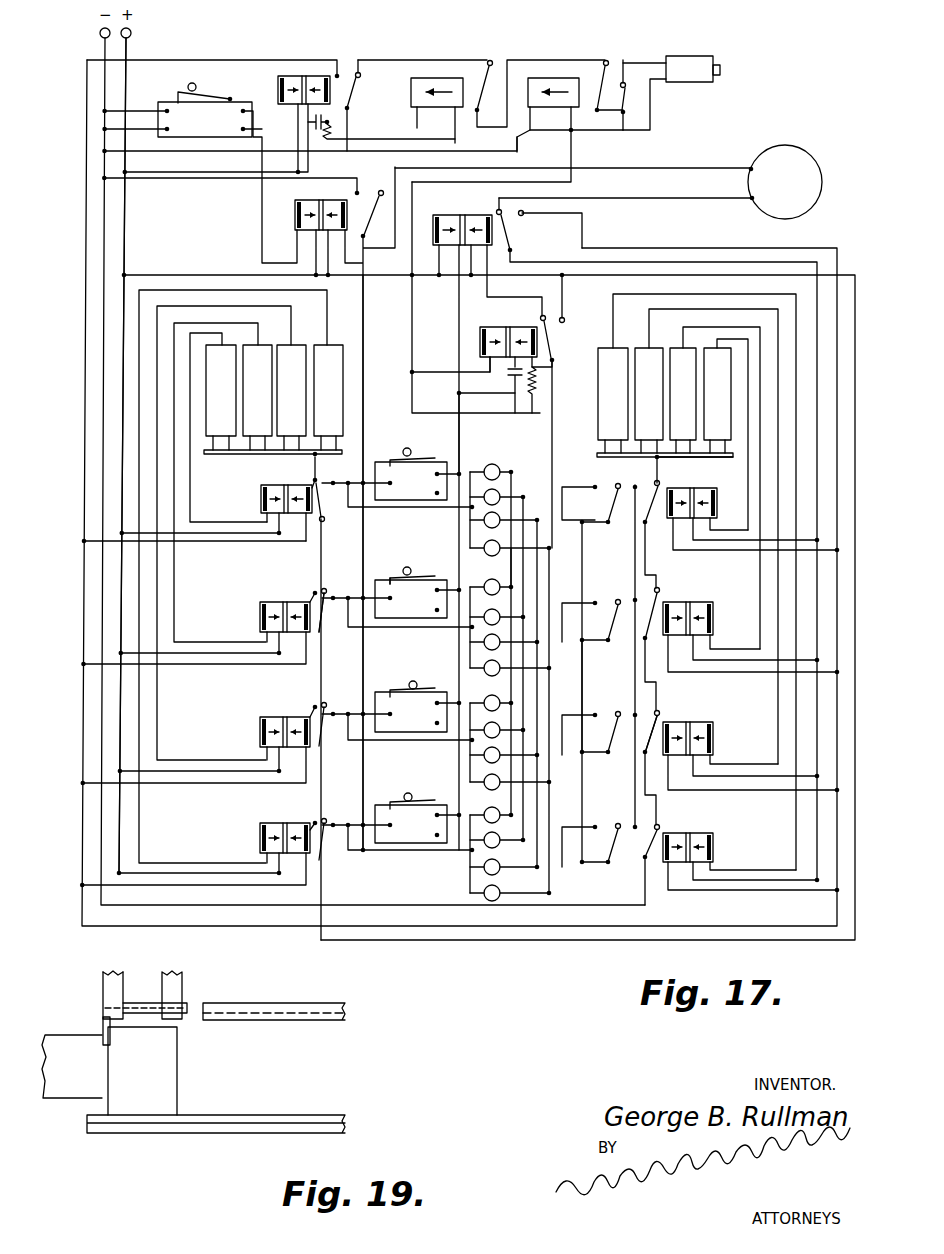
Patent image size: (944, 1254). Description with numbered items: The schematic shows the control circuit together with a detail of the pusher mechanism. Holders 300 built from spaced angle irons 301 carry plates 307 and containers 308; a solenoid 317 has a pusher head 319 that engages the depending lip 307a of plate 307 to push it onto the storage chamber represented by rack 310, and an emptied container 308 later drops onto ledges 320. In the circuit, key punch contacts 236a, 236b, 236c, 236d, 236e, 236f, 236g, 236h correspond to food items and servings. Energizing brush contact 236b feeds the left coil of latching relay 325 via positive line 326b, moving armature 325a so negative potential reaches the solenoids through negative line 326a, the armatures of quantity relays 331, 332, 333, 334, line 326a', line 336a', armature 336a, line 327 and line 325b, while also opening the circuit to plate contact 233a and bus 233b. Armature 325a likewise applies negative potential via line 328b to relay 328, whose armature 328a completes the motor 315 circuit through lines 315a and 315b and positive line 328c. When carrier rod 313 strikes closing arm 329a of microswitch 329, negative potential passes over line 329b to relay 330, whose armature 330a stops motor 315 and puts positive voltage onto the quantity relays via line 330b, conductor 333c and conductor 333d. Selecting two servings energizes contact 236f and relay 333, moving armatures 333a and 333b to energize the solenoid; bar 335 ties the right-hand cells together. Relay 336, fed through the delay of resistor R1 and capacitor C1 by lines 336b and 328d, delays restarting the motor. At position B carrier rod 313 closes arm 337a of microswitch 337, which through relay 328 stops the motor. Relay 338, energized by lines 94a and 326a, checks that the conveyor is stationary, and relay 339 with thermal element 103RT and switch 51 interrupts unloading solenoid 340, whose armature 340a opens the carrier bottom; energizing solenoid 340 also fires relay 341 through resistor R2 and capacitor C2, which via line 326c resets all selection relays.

In FIG. 17, the carrier rod 313 is at (196, 86).
In FIG. 17, the double pole double throw microswitch 337 is at (199, 182).
In FIG. 17, the closing arm 337a is at (178, 96).
In FIG. 17, the single pole double throw latching relay 341 is at (302, 75).
In FIG. 17, the capacitor C2 is at (312, 128).
In FIG. 17, the resistor R2 is at (334, 130).
In FIG. 17, the thermal relay 103RT is at (518, 142).
In FIG. 17, the single pole single throw normally closed relay 338 is at (440, 76).
In FIG. 17, the line 94a is at (417, 114).
In FIG. 17, the single pole single throw normally closed relay 339 is at (574, 52).
In FIG. 17, the switch 51 is at (624, 84).
In FIG. 17, the unloading solenoid 340 is at (702, 48).
In FIG. 17, the armature 340a is at (722, 70).
In FIG. 17, the motor 315 is at (800, 152).
In FIG. 17, the line 315a is at (668, 168).
In FIG. 17, the line 315b is at (662, 198).
In FIG. 17, the negative line 326a is at (429, 493).
In FIG. 17, the positive line 326b is at (126, 192).
In FIG. 17, the line 326c is at (84, 541).
In FIG. 17, the line 326a' is at (621, 680).
In FIG. 17, the latching relay 328 is at (300, 224).
In FIG. 17, the armature 328a is at (378, 190).
In FIG. 17, the line 328b is at (365, 318).
In FIG. 17, the positive line 328c is at (128, 274).
In FIG. 17, the line 328d is at (412, 350).
In FIG. 17, the single pole single throw latching relay 330 is at (474, 214).
In FIG. 17, the armature 330a is at (512, 228).
In FIG. 17, the line 330b is at (588, 232).
In FIG. 17, the line 327 is at (836, 272).
In FIG. 17, the key punch contact 236a is at (218, 432).
In FIG. 17, the brush contact 236b is at (262, 474).
In FIG. 17, the key punch contact 236c is at (288, 345).
In FIG. 17, the key punch contact 236d is at (384, 384).
In FIG. 17, the key punch contact 236e is at (602, 320).
In FIG. 17, the brush contact 236f is at (648, 350).
In FIG. 17, the key punch contact 236g is at (690, 350).
In FIG. 17, the key punch contact 236h is at (780, 308).
In FIG. 17, the plate contact 233a is at (252, 454).
In FIG. 17, the bus bar 233b is at (738, 466).
In FIG. 17, the latching relay 336 is at (524, 326).
In FIG. 17, the armature 336a is at (537, 318).
In FIG. 17, the line 336a' is at (527, 454).
In FIG. 17, the line 336b is at (460, 394).
In FIG. 17, the resistor R1 is at (538, 388).
In FIG. 17, the capacitor C1 is at (513, 391).
In FIG. 17, the microswitch 329 is at (391, 592).
In FIG. 17, the closing arm 329a is at (380, 568).
In FIG. 17, the line 329b is at (462, 434).
In FIG. 17, the solenoid 317 is at (500, 466).
In FIG. 17, the conductor 333d is at (510, 570).
In FIG. 17, the single pole double throw latching relay 325 is at (260, 614).
In FIG. 17, the armature 325a is at (324, 592).
In FIG. 17, the line 325b is at (428, 626).
In FIG. 17, the conductor 335 is at (664, 462).
In FIG. 17, the double pole double throw latching relay 331 is at (694, 490).
In FIG. 17, the double pole double throw latching relay 332 is at (674, 600).
In FIG. 17, the double pole double throw latching relay 333 is at (704, 722).
In FIG. 17, the armature 333a is at (614, 718).
In FIG. 17, the armature 333b is at (646, 700).
In FIG. 17, the conductor 333c is at (576, 716).
In FIG. 17, the double pole double throw latching relay 334 is at (714, 842).
In FIG. 19, the holder 300 is at (110, 971).
In FIG. 19, the angle iron 301 is at (168, 986).
In FIG. 19, the plate 307 is at (186, 1006).
In FIG. 19, the depending lip 307a is at (104, 1024).
In FIG. 19, the rack 310 is at (284, 1003).
In FIG. 19, the pusher head 319 is at (72, 1066).
In FIG. 19, the container 308 is at (142, 1071).
In FIG. 19, the ledges 320 is at (288, 1118).